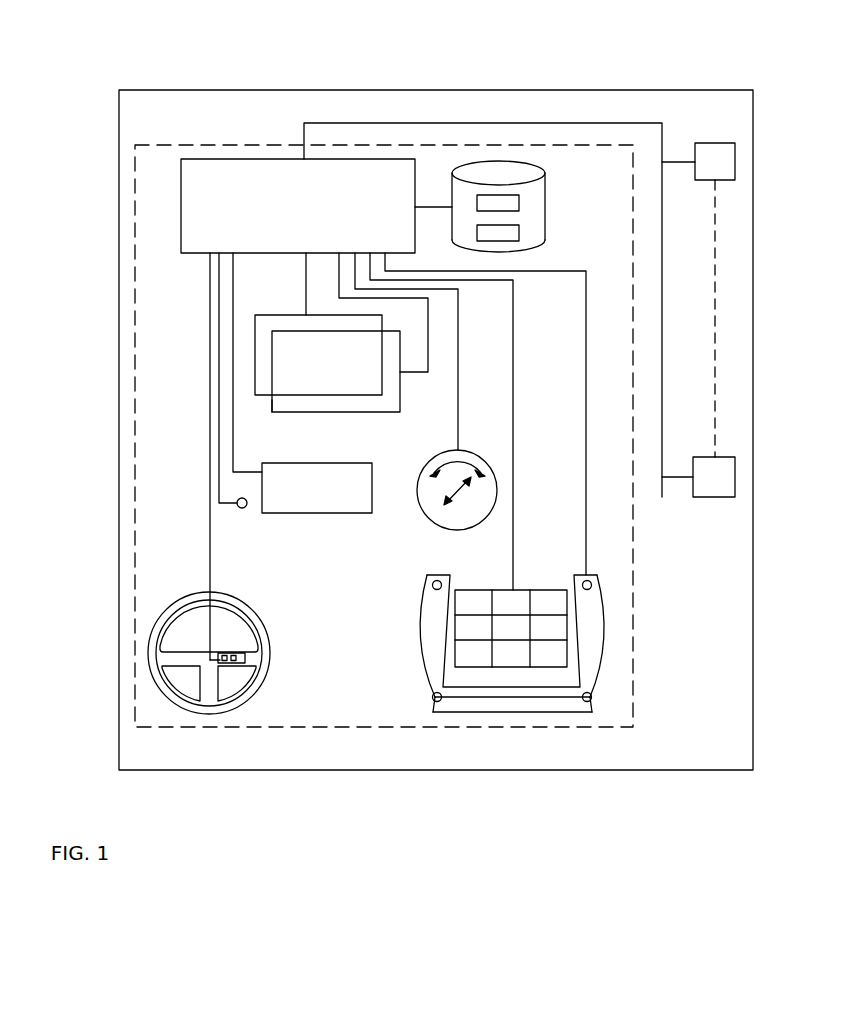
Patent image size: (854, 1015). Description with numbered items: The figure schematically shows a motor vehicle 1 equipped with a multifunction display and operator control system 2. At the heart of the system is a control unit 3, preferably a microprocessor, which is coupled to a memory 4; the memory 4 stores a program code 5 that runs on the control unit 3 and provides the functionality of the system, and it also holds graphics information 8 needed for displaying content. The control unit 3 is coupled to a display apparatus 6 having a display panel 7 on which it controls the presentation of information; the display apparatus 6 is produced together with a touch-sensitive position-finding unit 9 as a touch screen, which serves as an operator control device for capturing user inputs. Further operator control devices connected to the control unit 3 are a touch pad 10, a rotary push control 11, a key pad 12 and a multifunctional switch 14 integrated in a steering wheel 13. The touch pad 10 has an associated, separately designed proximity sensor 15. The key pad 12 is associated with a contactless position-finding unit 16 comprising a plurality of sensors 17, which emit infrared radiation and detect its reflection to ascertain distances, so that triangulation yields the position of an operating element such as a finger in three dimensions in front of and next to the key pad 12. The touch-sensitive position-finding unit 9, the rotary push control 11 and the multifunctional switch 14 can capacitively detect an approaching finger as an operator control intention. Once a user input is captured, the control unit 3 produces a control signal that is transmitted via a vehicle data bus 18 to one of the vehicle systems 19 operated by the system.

The motor vehicle 1 is at (358, 90).
The multifunction display and operator control system 2 is at (208, 145).
The control unit 3 is at (262, 159).
The memory 4 is at (469, 163).
The program code 5 is at (506, 226).
The display apparatus 6 is at (255, 336).
The display panel 7 is at (263, 363).
The graphics information 8 is at (494, 197).
The touch-sensitive position-finding unit 9 is at (272, 402).
The touch pad 10 is at (315, 513).
The rotary push control 11 is at (428, 517).
The key pad 12 is at (484, 667).
The steering wheel 13 is at (209, 714).
The multifunctional switch 14 is at (244, 658).
The proximity sensor 15 is at (241, 508).
The contactless position-finding unit 16 is at (527, 703).
The sensors 17 is at (433, 587).
The vehicle data bus 18 is at (634, 123).
The vehicle systems 19 is at (718, 143).